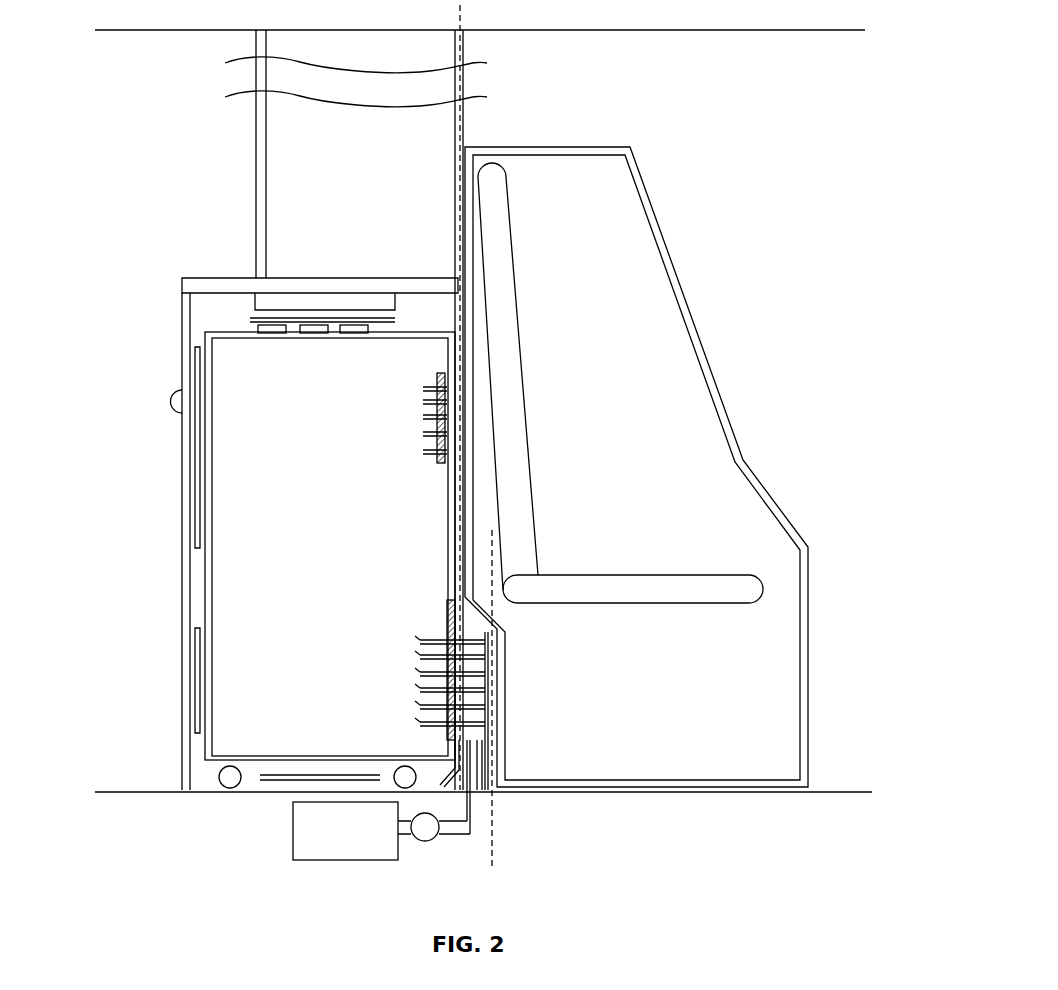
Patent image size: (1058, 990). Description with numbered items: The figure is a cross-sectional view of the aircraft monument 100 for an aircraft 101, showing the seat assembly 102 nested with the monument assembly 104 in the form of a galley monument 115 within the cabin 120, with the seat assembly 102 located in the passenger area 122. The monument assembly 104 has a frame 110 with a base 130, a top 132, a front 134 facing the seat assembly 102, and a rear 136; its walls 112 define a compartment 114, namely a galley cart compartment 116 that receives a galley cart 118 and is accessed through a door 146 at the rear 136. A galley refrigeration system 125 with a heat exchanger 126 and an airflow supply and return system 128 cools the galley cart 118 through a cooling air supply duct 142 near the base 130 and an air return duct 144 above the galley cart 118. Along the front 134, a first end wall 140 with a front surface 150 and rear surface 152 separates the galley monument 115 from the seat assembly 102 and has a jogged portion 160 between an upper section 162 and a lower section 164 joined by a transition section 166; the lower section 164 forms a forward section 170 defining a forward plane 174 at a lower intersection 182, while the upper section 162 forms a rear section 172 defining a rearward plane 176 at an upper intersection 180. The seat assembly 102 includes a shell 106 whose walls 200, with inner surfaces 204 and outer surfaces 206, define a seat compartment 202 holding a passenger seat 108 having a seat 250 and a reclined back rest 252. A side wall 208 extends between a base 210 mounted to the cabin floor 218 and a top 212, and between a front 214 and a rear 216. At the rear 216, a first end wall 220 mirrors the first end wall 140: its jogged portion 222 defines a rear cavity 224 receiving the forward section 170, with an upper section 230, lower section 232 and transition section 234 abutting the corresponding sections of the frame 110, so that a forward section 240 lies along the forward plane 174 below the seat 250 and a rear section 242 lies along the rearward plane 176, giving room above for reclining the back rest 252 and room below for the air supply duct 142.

The aircraft monument 100 is at (180, 188).
The aircraft 101 is at (846, 207).
The seat assembly 102 is at (745, 394).
The monument assembly 104 is at (152, 272).
The shell 106 is at (805, 633).
The passenger seat 108 is at (707, 580).
The frame 110 is at (466, 122).
The walls 112 is at (468, 190).
The compartment 114 is at (200, 590).
The galley monument 115 is at (130, 365).
The galley cart compartment 116 is at (200, 742).
The galley cart 118 is at (260, 687).
The cabin 120 is at (868, 420).
The passenger area 122 is at (742, 198).
The galley refrigeration system 125 is at (505, 815).
The heat exchanger 126 is at (312, 862).
The airflow supply and return system 128 is at (355, 868).
The base 130 is at (187, 793).
The top 132 is at (260, 25).
The front 134 is at (481, 100).
The rear 136 is at (178, 418).
The first end wall 140 is at (467, 427).
The cooling air supply duct 142 is at (447, 725).
The air return duct 144 is at (278, 312).
The door 146 is at (183, 485).
The front surface 150 is at (455, 485).
The rear surface 152 is at (465, 478).
The jogged portion 160 is at (493, 607).
The upper section 162 is at (467, 513).
The lower section 164 is at (501, 705).
The transition section 166 is at (481, 600).
The forward section 170 is at (501, 735).
The rear section 172 is at (466, 333).
The forward plane 174 is at (495, 840).
The rearward plane 176 is at (475, 257).
The upper intersection 180 is at (452, 612).
The lower intersection 182 is at (488, 634).
The walls 200 is at (587, 150).
The seat compartment 202 is at (620, 247).
The inner surfaces 204 is at (800, 704).
The outer surfaces 206 is at (810, 713).
The side wall 208 is at (697, 460).
The base 210 is at (672, 793).
The top 212 is at (613, 146).
The front 214 is at (811, 585).
The rear 216 is at (464, 176).
The cabin floor 218 is at (840, 792).
The first end wall 220 is at (476, 288).
The jogged portion 222 is at (518, 616).
The rear cavity 224 is at (488, 795).
The upper section 230 is at (476, 312).
The lower section 232 is at (508, 673).
The transition section 234 is at (506, 612).
The forward section 240 is at (508, 767).
The rear section 242 is at (473, 488).
The seat 250 is at (688, 598).
The back rest 252 is at (462, 447).